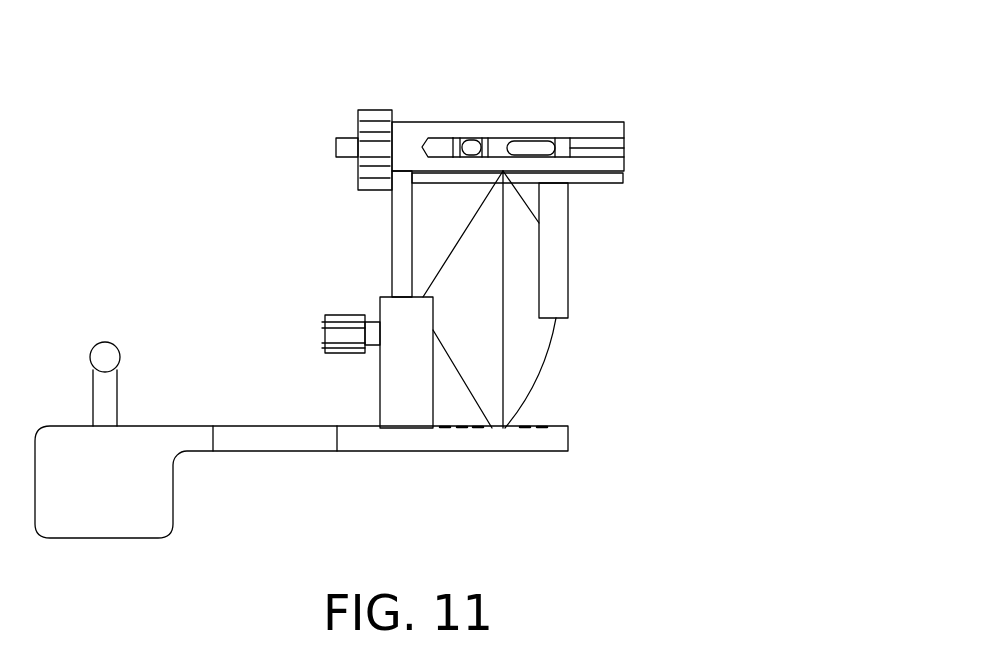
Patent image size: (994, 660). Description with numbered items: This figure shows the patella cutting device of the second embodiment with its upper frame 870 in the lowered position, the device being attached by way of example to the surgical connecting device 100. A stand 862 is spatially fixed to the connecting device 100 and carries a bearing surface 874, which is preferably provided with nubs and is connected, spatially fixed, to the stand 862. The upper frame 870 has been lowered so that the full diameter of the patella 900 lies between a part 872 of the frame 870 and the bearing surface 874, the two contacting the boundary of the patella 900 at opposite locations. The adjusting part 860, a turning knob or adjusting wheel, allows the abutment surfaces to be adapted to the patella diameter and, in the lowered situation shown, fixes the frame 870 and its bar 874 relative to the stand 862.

The connecting device 100 is at (90, 548).
The adjusting part 860 is at (325, 337).
The stand 862 is at (388, 397).
The upper frame 870 is at (623, 130).
The part of the frame 872 is at (503, 121).
The bearing surface 874 is at (392, 245).
The patella 900 is at (540, 353).